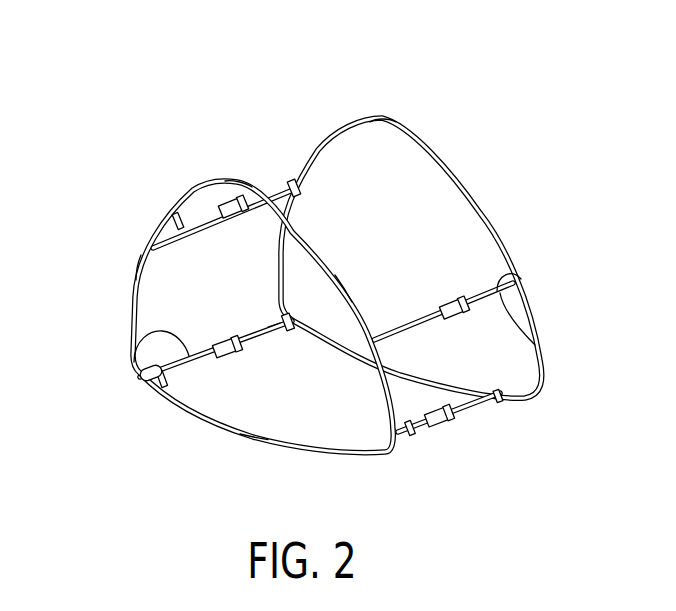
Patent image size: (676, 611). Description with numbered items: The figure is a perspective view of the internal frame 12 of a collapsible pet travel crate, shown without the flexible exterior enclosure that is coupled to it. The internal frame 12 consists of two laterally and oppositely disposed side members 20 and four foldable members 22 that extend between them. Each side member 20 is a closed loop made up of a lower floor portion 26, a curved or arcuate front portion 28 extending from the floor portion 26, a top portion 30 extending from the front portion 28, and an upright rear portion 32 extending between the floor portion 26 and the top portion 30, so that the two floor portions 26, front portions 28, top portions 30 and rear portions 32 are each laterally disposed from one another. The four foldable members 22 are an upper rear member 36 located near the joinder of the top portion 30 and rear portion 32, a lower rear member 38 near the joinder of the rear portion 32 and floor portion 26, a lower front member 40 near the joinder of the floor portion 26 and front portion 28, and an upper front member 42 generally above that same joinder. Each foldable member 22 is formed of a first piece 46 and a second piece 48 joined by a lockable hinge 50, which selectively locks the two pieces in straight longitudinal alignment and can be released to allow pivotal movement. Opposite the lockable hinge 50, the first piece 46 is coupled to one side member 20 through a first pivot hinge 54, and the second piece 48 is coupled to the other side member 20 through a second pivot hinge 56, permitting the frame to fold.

The internal frame 12 is at (483, 212).
The side member 20 is at (135, 290).
The foldable member 22 is at (178, 218).
The floor portion 26 is at (253, 440).
The front portion 28 is at (348, 292).
The top portion 30 is at (237, 183).
The rear portion 32 is at (138, 266).
The upper rear member 36 is at (288, 184).
The lower rear member 38 is at (262, 325).
The lower front member 40 is at (486, 403).
The upper front member 42 is at (543, 347).
The first piece 46 is at (131, 344).
The second piece 48 is at (274, 330).
The lockable hinge 50 is at (235, 362).
The first pivot hinge 54 is at (138, 371).
The second pivot hinge 56 is at (292, 315).